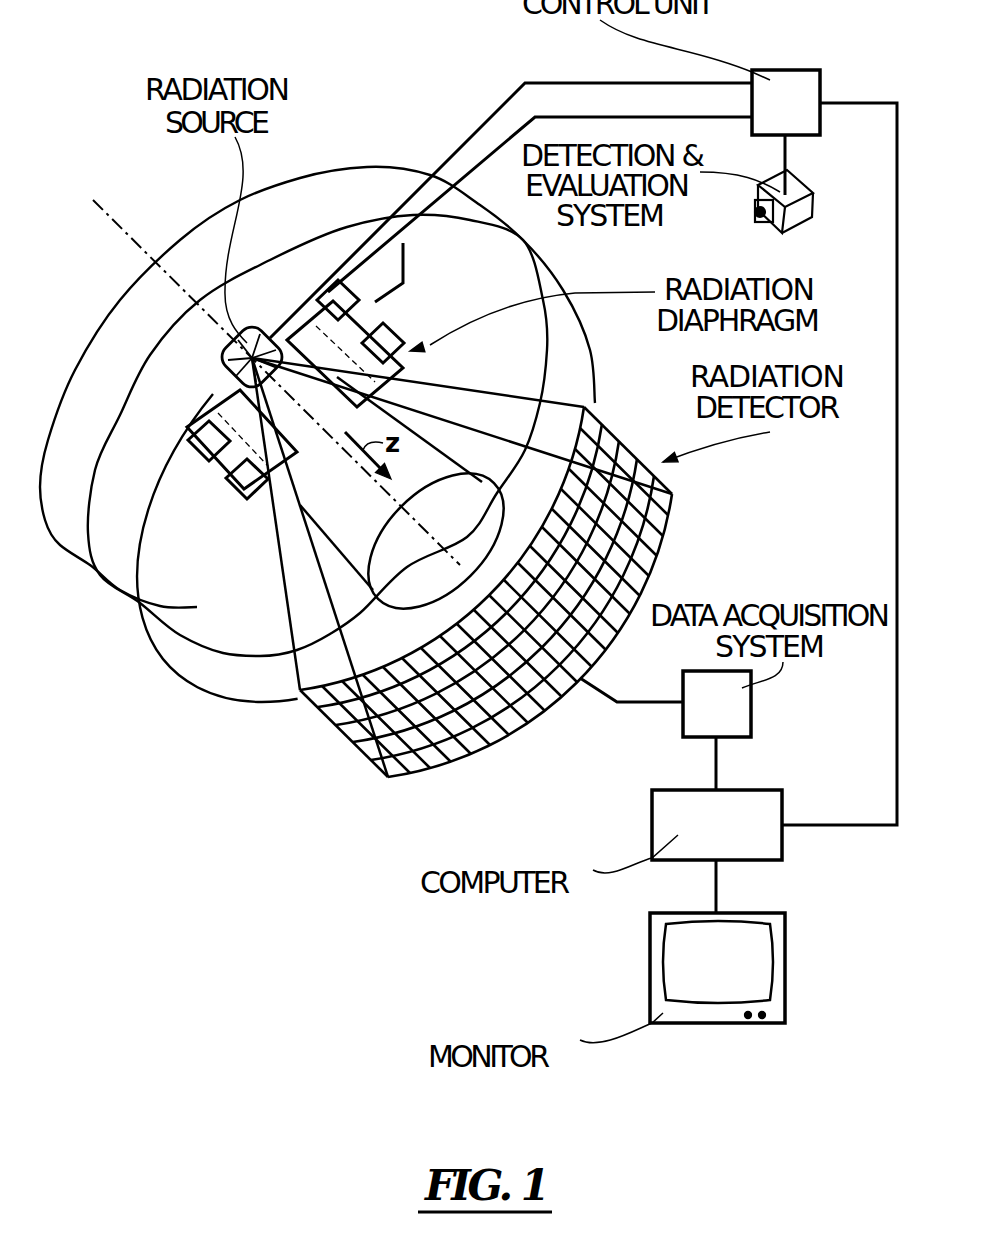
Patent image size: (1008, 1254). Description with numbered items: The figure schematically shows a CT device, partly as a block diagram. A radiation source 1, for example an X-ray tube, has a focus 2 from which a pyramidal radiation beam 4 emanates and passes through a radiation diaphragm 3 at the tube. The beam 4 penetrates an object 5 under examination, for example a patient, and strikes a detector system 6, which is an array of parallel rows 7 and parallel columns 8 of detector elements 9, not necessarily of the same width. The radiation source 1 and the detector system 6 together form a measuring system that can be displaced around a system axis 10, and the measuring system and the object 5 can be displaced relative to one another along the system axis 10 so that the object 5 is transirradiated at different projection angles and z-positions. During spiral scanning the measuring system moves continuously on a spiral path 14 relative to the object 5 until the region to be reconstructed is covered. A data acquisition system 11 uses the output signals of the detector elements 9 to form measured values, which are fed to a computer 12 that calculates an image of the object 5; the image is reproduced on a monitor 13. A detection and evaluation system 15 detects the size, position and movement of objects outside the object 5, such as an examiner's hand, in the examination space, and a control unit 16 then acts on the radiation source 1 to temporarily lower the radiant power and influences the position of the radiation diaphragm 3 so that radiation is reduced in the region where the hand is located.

The radiation source 1 is at (254, 330).
The focus 2 is at (230, 364).
The radiation diaphragm 3 is at (358, 336).
The radiation beam 4 is at (290, 617).
The object under examination 5 is at (340, 518).
The detector system 6 is at (539, 614).
The rows 7 is at (375, 770).
The columns 8 is at (400, 778).
The detector elements 9 is at (440, 742).
The system axis 10 is at (118, 227).
The data acquisition system 11 is at (752, 702).
The computer 12 is at (652, 824).
The monitor 13 is at (650, 967).
The spiral path 14 is at (232, 212).
The detection and evaluation system 15 is at (812, 203).
The control unit 16 is at (786, 70).